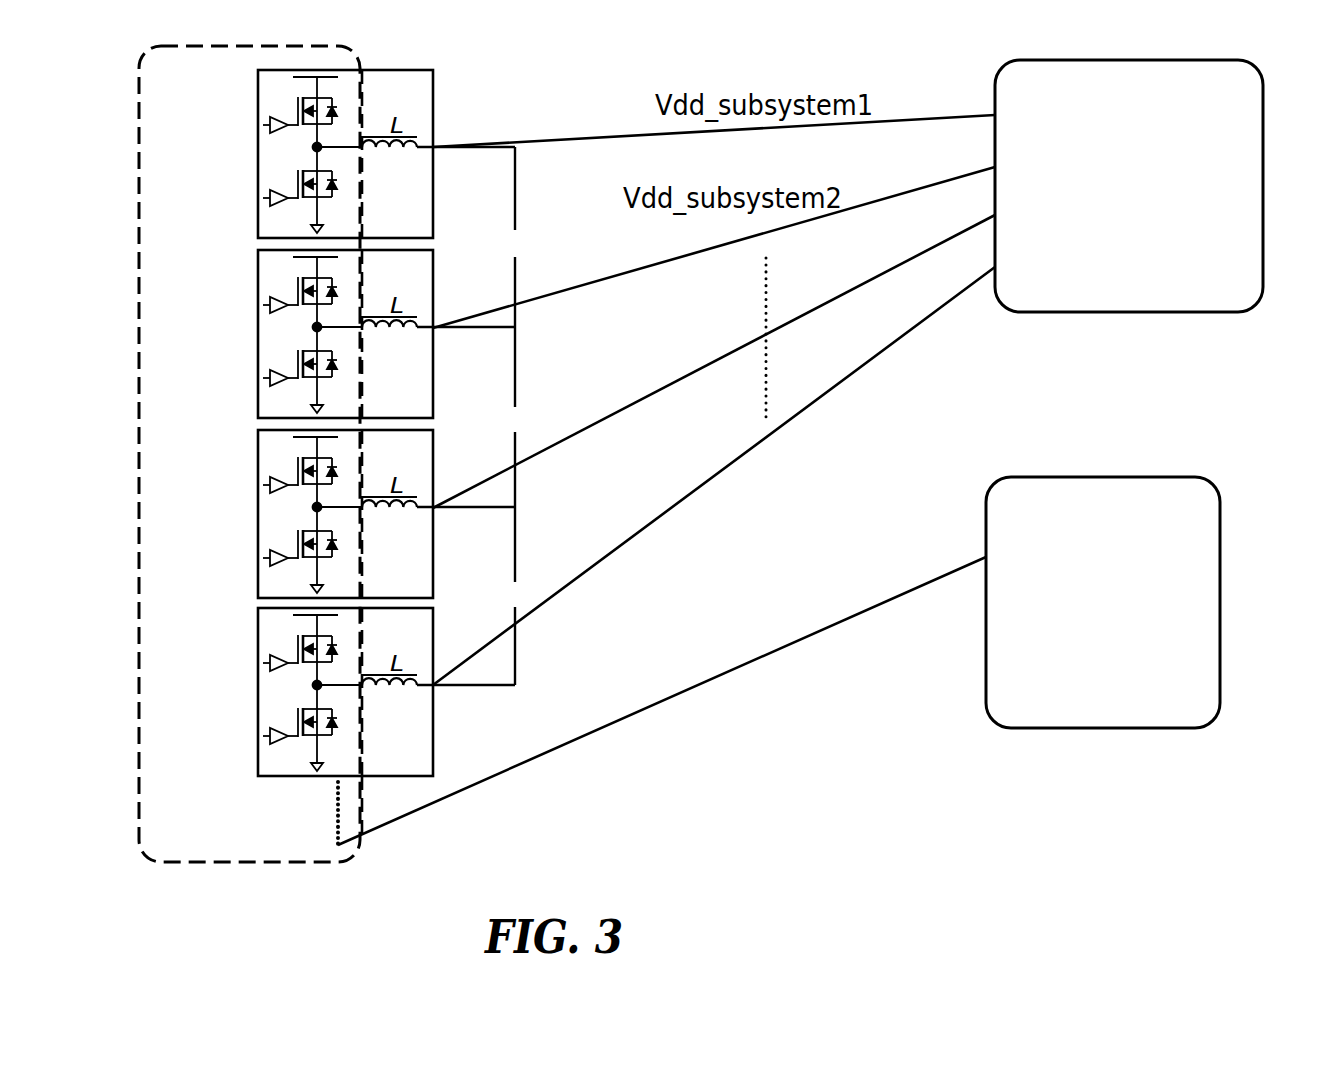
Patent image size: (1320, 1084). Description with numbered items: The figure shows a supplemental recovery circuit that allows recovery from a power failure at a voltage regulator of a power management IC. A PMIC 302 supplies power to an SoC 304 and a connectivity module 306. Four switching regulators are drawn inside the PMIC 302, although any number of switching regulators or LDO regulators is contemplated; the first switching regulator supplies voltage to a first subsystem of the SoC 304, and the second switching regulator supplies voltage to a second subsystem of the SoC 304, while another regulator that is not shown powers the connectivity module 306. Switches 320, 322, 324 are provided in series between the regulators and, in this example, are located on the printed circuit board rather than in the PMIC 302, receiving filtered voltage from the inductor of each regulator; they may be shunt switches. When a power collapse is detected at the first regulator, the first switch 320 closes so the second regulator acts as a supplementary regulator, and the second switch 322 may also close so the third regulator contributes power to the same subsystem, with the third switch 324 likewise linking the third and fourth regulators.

The PMIC 302 is at (210, 156).
The SoC 304 is at (1150, 217).
The connectivity module 306 is at (1124, 642).
The first switch 320 is at (532, 251).
The second switch 322 is at (525, 428).
The third switch 324 is at (525, 596).